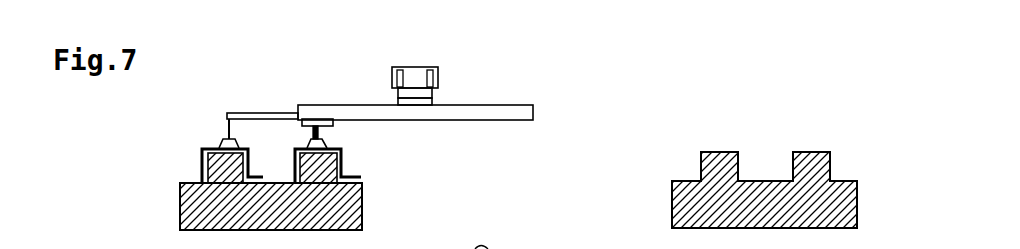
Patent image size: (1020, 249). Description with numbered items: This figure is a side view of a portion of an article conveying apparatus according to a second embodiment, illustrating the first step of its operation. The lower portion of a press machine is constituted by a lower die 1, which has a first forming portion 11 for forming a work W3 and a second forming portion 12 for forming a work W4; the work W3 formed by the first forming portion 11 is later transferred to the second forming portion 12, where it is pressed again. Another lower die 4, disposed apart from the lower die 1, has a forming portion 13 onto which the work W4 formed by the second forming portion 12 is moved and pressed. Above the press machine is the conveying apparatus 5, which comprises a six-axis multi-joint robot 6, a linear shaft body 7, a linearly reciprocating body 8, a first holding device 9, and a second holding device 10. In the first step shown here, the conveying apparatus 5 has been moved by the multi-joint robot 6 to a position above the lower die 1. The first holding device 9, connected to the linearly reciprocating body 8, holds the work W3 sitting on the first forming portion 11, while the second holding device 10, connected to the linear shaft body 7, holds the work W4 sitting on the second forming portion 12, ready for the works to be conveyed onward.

The lower die 1 is at (335, 219).
The lower die 4 is at (834, 198).
The conveying apparatus 5 is at (516, 54).
The six-axis multi-joint robot 6 is at (412, 73).
The linear shaft body 7 is at (512, 114).
The linearly reciprocating body 8 is at (333, 123).
The first holding device 9 is at (322, 144).
The second holding device 10 is at (249, 113).
The first forming portion 11 is at (202, 177).
The second forming portion 12 is at (322, 163).
The forming portion 13 is at (717, 158).
The work W3 is at (202, 177).
The work W4 is at (345, 167).